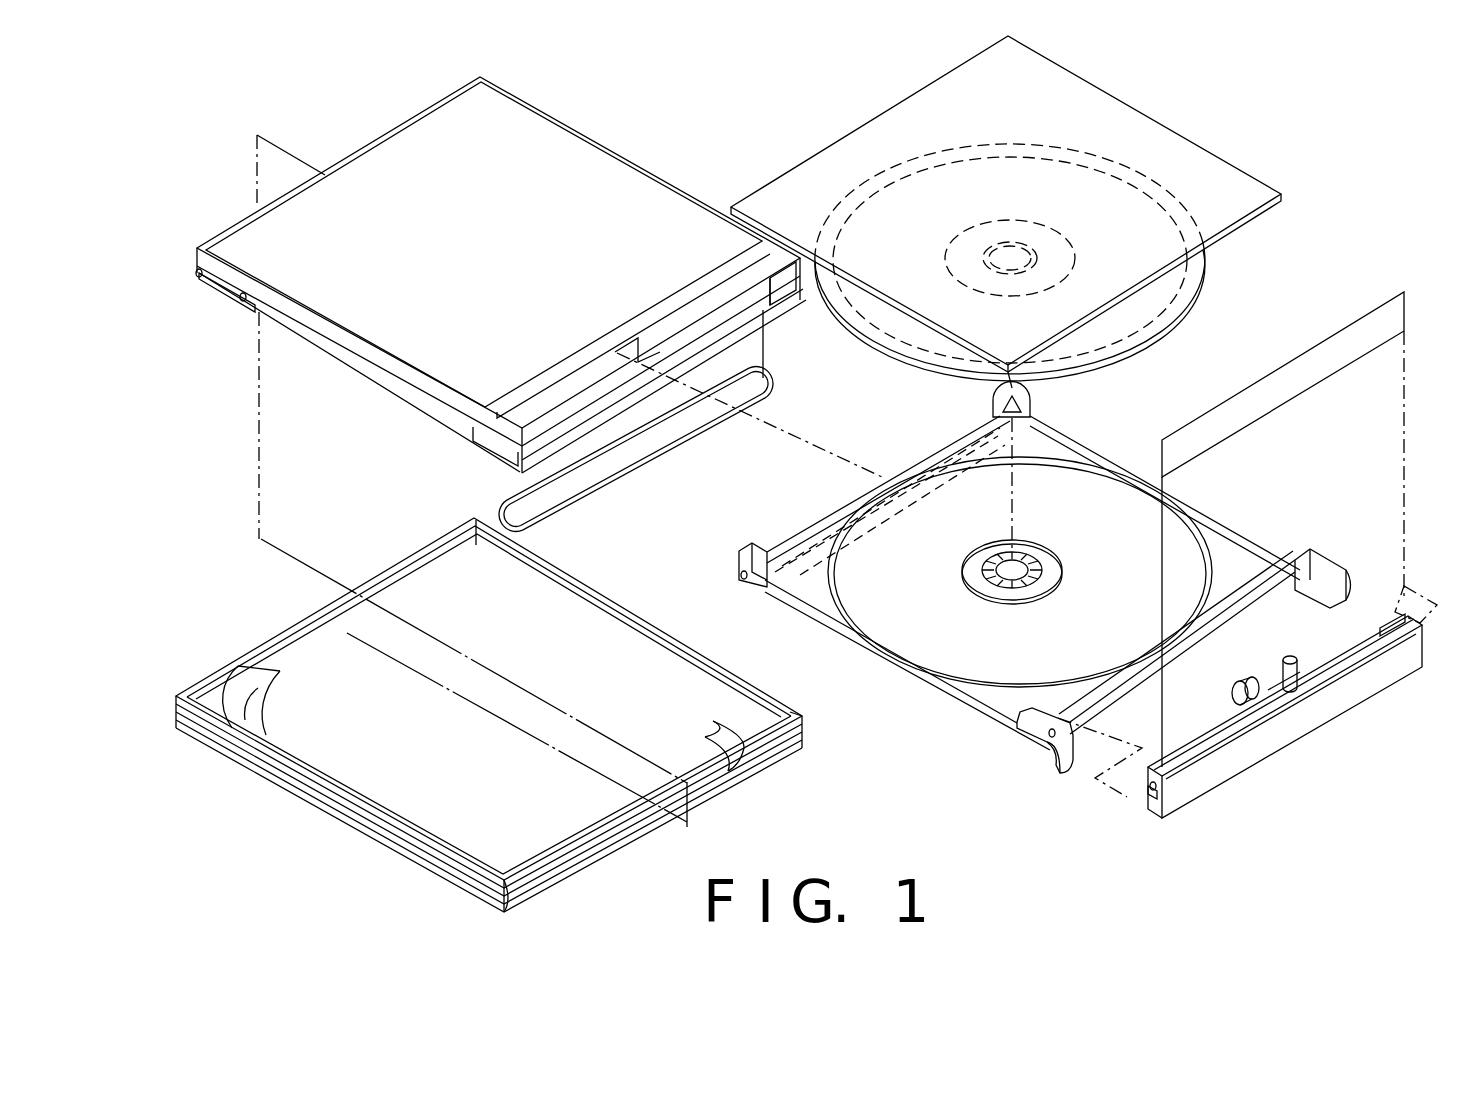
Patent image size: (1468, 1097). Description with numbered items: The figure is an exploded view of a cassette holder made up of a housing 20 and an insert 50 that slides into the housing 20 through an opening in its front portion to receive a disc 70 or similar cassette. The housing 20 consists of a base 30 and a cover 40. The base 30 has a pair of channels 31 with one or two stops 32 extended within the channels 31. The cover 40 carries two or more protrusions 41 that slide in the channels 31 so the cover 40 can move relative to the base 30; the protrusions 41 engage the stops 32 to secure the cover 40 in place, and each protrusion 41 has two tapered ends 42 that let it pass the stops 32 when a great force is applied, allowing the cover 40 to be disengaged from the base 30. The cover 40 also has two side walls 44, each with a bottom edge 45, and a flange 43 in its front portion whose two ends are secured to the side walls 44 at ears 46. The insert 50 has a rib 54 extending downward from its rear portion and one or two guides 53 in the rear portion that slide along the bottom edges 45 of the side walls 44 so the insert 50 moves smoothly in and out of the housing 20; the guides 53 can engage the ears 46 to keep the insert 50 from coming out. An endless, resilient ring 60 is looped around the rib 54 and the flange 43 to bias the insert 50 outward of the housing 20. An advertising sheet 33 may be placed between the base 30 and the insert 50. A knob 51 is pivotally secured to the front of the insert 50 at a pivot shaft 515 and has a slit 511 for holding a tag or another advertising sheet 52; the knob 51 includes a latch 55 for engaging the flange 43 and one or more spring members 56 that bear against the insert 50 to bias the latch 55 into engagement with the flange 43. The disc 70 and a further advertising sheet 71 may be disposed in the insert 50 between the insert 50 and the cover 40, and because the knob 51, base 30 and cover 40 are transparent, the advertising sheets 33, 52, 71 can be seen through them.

The housing 20 is at (257, 442).
The base 30 is at (328, 800).
The channels 31 is at (803, 722).
The stops 32 is at (522, 566).
The advertising sheet 33 is at (737, 747).
The cover 40 is at (572, 140).
The protrusions 41 is at (210, 280).
The tapered ends 42 is at (247, 303).
The flange 43 is at (760, 318).
The side walls 44 is at (337, 347).
The bottom edge 45 is at (393, 393).
The ears 46 is at (493, 453).
The insert 50 is at (1023, 728).
The knob 51 is at (1325, 718).
The slit 511 is at (1384, 628).
The pivot shaft 515 is at (1140, 785).
The advertising sheet 52 is at (1314, 368).
The guides 53 is at (737, 572).
The rib 54 is at (787, 573).
The latch 55 is at (1266, 688).
The spring members 56 is at (1240, 688).
The resilient ring 60 is at (670, 452).
The disc 70 is at (1194, 298).
The advertising sheet 71 is at (1251, 214).